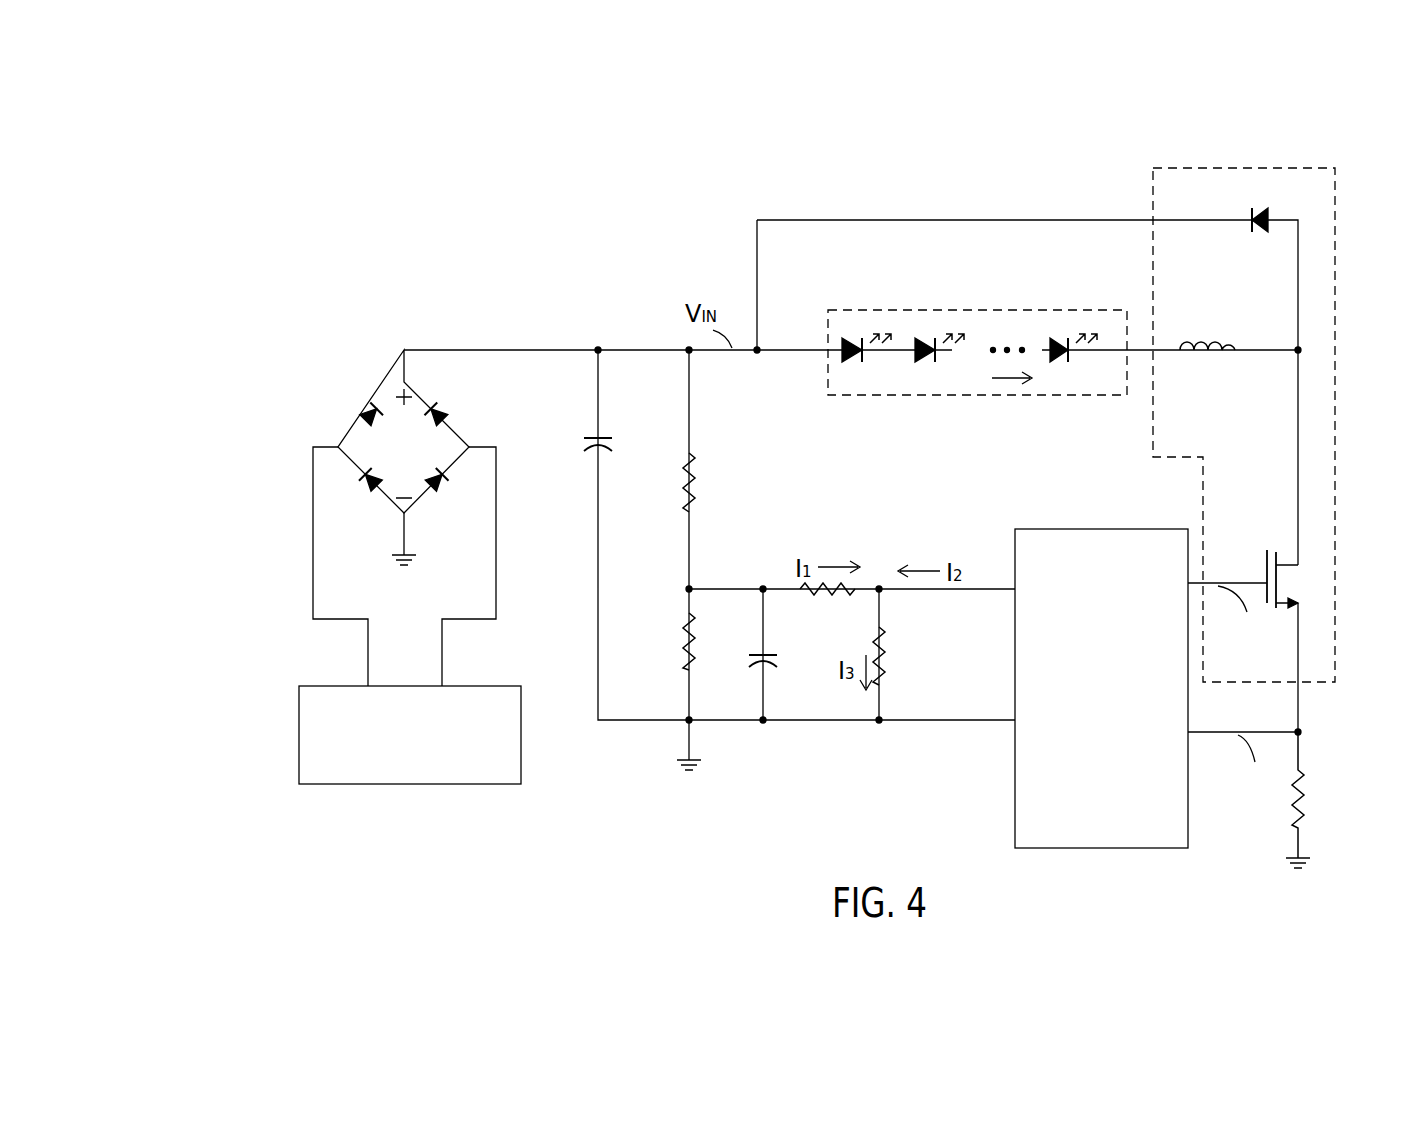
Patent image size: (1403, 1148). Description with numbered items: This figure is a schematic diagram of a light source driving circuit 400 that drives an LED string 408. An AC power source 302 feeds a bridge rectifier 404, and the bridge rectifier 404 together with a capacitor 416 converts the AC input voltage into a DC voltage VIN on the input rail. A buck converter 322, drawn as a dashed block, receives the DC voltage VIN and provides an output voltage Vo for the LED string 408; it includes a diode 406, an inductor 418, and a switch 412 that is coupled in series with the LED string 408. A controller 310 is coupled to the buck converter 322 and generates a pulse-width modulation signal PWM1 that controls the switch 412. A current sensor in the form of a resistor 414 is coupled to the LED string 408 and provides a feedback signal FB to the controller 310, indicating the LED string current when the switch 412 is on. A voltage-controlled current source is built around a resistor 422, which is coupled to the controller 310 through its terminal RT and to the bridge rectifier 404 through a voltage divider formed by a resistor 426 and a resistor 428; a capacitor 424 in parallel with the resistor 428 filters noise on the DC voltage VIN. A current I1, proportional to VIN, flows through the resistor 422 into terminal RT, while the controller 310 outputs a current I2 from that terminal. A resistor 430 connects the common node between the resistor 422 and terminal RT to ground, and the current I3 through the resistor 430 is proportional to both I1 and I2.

The light source driving circuit 400 is at (362, 193).
The AC power source 302 is at (520, 726).
The bridge rectifier 404 is at (455, 430).
The capacitor 416 is at (603, 443).
The resistor 426 is at (696, 506).
The resistor 428 is at (692, 660).
The capacitor 424 is at (768, 655).
The resistor 422 is at (848, 596).
The resistor 430 is at (883, 680).
The LED string 408 is at (912, 310).
The buck converter 322 is at (1151, 188).
The diode 406 is at (1251, 212).
The inductor 418 is at (1233, 345).
The controller 310 is at (1046, 529).
The switch 412 is at (1266, 572).
The resistor 414 is at (1290, 820).